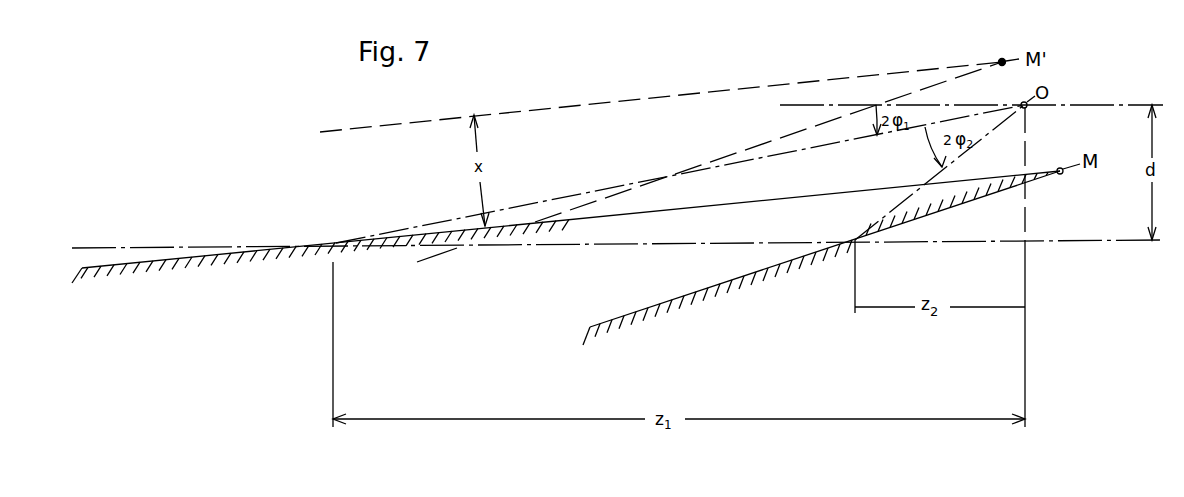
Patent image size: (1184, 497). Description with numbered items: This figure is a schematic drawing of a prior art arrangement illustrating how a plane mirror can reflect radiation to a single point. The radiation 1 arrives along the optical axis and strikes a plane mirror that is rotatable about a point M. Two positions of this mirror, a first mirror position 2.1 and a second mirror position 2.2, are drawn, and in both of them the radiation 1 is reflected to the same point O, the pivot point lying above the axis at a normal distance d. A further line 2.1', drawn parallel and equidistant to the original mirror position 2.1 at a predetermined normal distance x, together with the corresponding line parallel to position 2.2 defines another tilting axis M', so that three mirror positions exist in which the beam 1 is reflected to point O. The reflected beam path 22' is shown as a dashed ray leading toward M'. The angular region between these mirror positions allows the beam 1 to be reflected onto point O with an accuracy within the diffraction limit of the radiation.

The radiation 1 is at (185, 247).
The first position of plane mirror 2.1 is at (566, 227).
The second position of plane mirror 2.2 is at (612, 322).
The line parallel to first mirror position 2.1' is at (661, 97).
The reflected beam path 22' is at (709, 162).